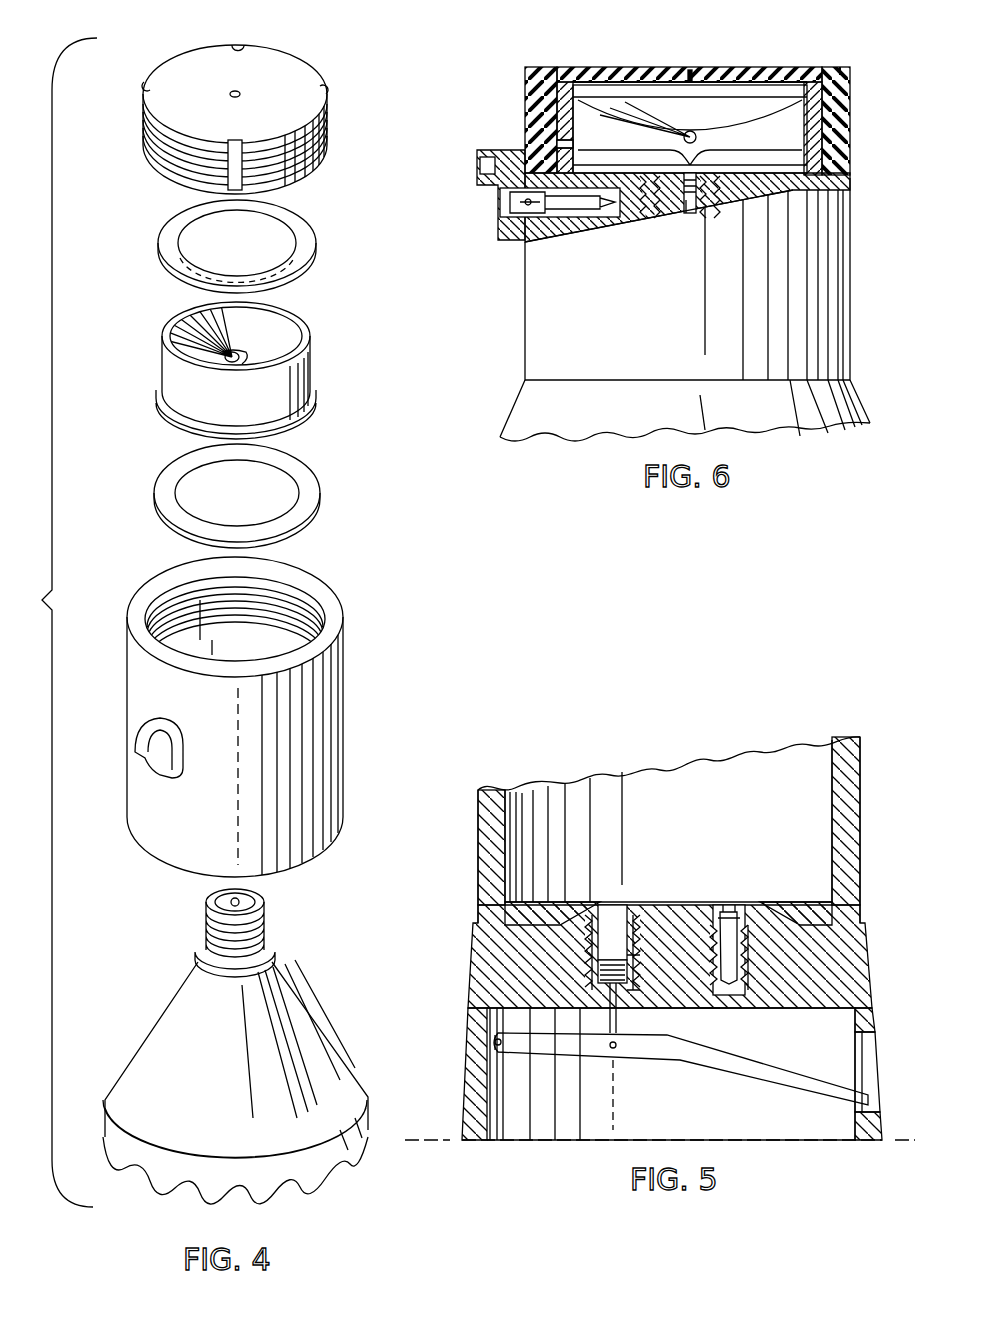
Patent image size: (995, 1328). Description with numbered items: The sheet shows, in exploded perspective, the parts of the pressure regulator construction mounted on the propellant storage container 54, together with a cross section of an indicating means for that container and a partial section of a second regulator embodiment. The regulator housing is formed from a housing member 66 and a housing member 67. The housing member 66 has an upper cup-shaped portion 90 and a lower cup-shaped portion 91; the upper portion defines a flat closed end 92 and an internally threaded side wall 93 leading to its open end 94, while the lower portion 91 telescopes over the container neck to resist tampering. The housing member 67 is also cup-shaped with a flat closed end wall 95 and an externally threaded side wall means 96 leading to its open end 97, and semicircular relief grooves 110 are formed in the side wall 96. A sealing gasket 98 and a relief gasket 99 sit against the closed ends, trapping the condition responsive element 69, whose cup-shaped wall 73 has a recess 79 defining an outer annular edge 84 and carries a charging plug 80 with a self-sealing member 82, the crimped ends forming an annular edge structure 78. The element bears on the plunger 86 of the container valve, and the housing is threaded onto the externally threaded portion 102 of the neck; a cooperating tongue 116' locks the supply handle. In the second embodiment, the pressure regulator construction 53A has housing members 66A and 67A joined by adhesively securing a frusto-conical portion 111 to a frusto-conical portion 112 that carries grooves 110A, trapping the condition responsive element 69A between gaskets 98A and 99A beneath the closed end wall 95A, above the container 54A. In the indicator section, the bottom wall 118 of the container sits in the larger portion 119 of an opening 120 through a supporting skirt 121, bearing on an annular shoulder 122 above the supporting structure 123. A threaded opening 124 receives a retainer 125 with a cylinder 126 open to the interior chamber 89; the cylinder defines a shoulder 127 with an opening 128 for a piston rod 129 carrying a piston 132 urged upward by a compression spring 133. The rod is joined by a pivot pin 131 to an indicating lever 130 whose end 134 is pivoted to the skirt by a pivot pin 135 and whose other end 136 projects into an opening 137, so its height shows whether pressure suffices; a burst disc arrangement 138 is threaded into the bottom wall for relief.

In FIG. 4, the propellant storage container 54 is at (230, 1045).
In FIG. 5, the propellant storage container 54 is at (702, 810).
In FIG. 6, the storage container 54A is at (807, 410).
In FIG. 4, the housing member 66 is at (235, 704).
In FIG. 6, the housing member 66A is at (840, 155).
In FIG. 4, the housing member 67 is at (233, 114).
In FIG. 6, the housing member 67A is at (800, 75).
In FIG. 4, the condition responsive element 69 is at (246, 366).
In FIG. 6, the condition responsive element 69A is at (635, 105).
In FIG. 4, the cup-shaped wall 73 is at (180, 382).
In FIG. 4, the annular edge structure 78 is at (310, 407).
In FIG. 4, the recess 79 is at (205, 333).
In FIG. 4, the charging plug 80 is at (250, 358).
In FIG. 4, the self-sealing member 82 is at (248, 330).
In FIG. 4, the outer annular edge 84 is at (168, 345).
In FIG. 4, the plunger 86 is at (230, 902).
In FIG. 5, the interior chamber 89 is at (772, 760).
In FIG. 4, the upper cup-shaped portion 90 is at (140, 667).
In FIG. 4, the lower cup-shaped portion 91 is at (158, 826).
In FIG. 4, the closed end 92 is at (235, 645).
In FIG. 4, the internally threaded side wall 93 is at (305, 605).
In FIG. 4, the open end 94 is at (170, 577).
In FIG. 4, the closed end wall 95 is at (190, 62).
In FIG. 6, the closed end wall 95A is at (715, 70).
In FIG. 4, the externally threaded side wall means 96 is at (143, 137).
In FIG. 4, the open end 97 is at (302, 183).
In FIG. 4, the sealing gasket 98 is at (310, 488).
In FIG. 6, the sealing gasket 98A is at (525, 150).
In FIG. 4, the relief gasket 99 is at (302, 236).
In FIG. 6, the relief gasket 99A is at (580, 45).
In FIG. 4, the externally threaded portion 102 is at (262, 930).
In FIG. 4, the semicircular relief grooves 110 is at (248, 48).
In FIG. 6, the grooves 110A is at (845, 75).
In FIG. 6, the frusto-conical portion 111 is at (840, 67).
In FIG. 6, the frusto-conical portion 112 is at (530, 86).
In FIG. 4, the cooperating tongue 116' is at (122, 748).
In FIG. 5, the bottom wall 118 is at (768, 945).
In FIG. 5, the larger portion 119 is at (868, 975).
In FIG. 5, the opening 120 is at (858, 1030).
In FIG. 5, the supporting skirt 121 is at (470, 1092).
In FIG. 5, the annular shoulder 122 is at (868, 995).
In FIG. 5, the supporting structure 123 is at (440, 1138).
In FIG. 5, the threaded opening 124 is at (635, 935).
In FIG. 5, the retainer 125 is at (635, 960).
In FIG. 5, the cylinder 126 is at (612, 935).
In FIG. 5, the shoulder 127 is at (595, 968).
In FIG. 5, the opening 128 is at (637, 1000).
In FIG. 5, the piston rod 129 is at (610, 1020).
In FIG. 5, the indicating lever 130 is at (641, 1065).
In FIG. 5, the pivot pin 131 is at (616, 1048).
In FIG. 5, the piston 132 is at (592, 938).
In FIG. 5, the compression spring 133 is at (733, 990).
In FIG. 5, the lever end 134 is at (495, 1035).
In FIG. 5, the pivot pin 135 is at (490, 1043).
In FIG. 5, the lever end 136 is at (872, 1095).
In FIG. 5, the opening 137 is at (867, 1046).
In FIG. 5, the burst disc arrangement 138 is at (735, 980).
In FIG. 6, the pressure regulator construction 53A is at (700, 128).